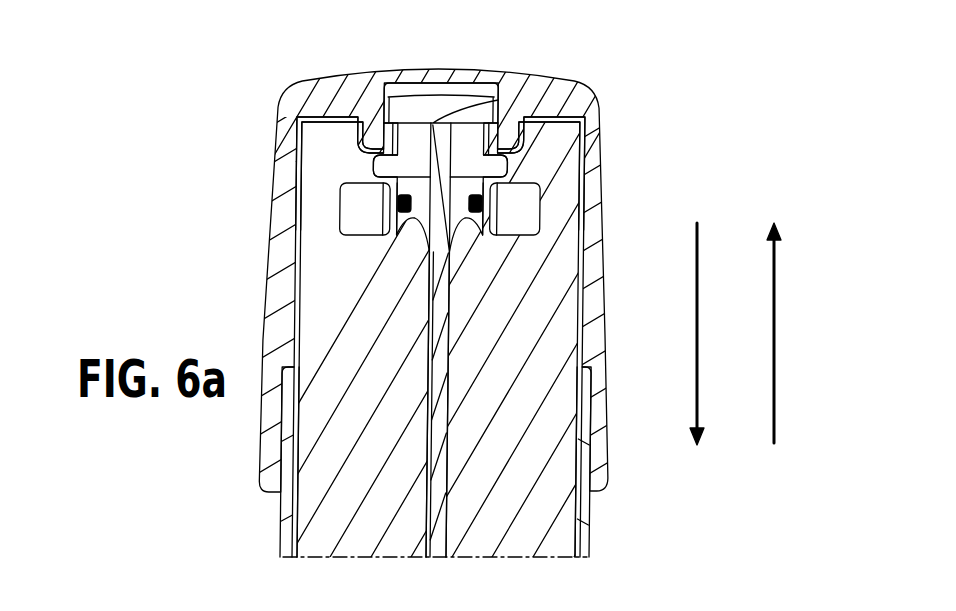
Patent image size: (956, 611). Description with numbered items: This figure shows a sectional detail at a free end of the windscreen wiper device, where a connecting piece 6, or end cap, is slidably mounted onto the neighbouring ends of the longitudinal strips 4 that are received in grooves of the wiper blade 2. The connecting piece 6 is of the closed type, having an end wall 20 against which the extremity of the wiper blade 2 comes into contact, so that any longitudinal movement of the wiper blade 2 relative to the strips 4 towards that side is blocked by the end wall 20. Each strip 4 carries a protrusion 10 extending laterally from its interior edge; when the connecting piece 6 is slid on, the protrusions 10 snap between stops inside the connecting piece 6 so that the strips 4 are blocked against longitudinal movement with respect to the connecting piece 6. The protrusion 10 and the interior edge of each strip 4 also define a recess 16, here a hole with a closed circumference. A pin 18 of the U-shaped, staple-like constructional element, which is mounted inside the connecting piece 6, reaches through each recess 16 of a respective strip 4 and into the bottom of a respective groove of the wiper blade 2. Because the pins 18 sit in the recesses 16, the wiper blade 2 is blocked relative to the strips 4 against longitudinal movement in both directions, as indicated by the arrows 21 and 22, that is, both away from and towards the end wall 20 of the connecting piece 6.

The wiper blade 2 is at (441, 551).
The strips 4 is at (336, 544).
The connecting piece 6 is at (283, 270).
The protrusion 10 is at (430, 152).
The recess 16 is at (362, 220).
The pin 18 is at (397, 202).
The end wall 20 is at (436, 70).
The arrow 21 is at (699, 345).
The arrow 22 is at (776, 345).